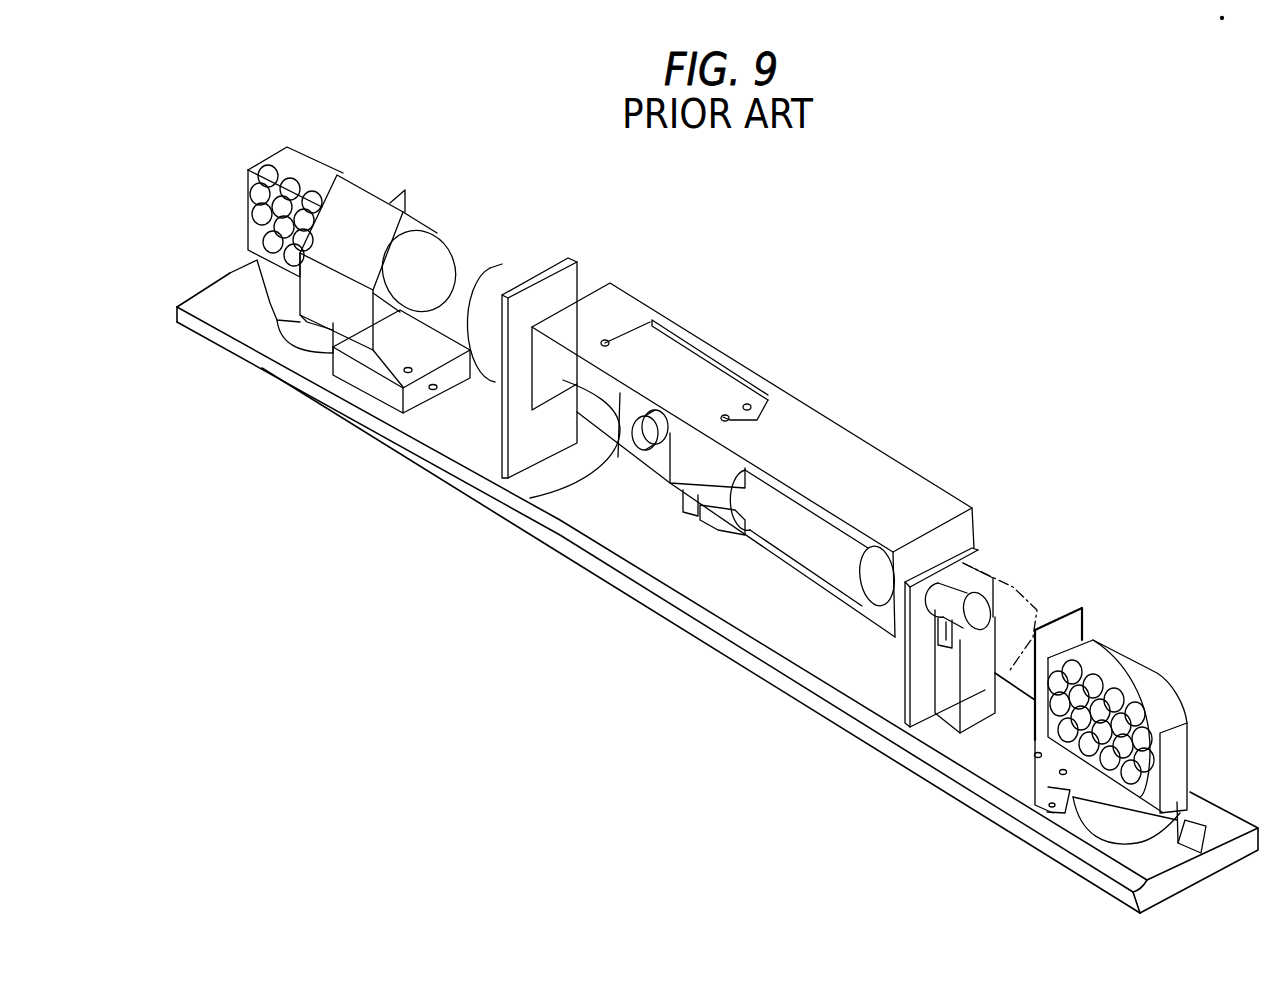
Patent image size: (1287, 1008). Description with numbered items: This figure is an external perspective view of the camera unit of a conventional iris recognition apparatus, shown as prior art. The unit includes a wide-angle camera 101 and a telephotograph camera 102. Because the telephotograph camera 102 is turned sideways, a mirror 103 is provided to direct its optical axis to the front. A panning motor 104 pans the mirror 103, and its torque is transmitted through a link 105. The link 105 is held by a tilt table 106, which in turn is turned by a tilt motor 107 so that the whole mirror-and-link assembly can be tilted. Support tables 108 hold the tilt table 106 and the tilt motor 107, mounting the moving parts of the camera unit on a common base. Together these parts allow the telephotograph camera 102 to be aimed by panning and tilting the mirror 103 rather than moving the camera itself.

The wide-angle camera 101 is at (645, 440).
The telephotograph camera 102 is at (820, 550).
The mirror 103 is at (702, 477).
The panning motor 104 is at (543, 410).
The link 105 is at (707, 360).
The tilt table 106 is at (903, 478).
The tilt motor 107 is at (503, 277).
The support tables 108 is at (507, 432).